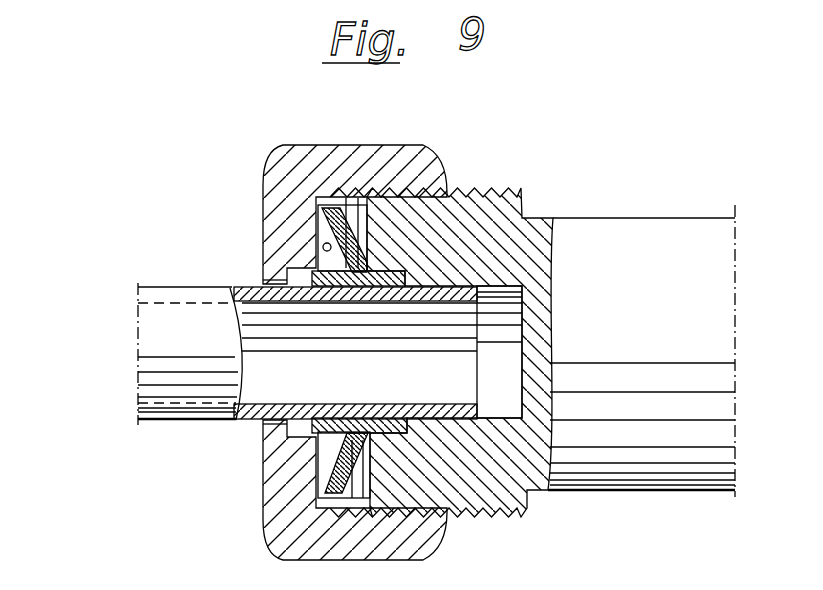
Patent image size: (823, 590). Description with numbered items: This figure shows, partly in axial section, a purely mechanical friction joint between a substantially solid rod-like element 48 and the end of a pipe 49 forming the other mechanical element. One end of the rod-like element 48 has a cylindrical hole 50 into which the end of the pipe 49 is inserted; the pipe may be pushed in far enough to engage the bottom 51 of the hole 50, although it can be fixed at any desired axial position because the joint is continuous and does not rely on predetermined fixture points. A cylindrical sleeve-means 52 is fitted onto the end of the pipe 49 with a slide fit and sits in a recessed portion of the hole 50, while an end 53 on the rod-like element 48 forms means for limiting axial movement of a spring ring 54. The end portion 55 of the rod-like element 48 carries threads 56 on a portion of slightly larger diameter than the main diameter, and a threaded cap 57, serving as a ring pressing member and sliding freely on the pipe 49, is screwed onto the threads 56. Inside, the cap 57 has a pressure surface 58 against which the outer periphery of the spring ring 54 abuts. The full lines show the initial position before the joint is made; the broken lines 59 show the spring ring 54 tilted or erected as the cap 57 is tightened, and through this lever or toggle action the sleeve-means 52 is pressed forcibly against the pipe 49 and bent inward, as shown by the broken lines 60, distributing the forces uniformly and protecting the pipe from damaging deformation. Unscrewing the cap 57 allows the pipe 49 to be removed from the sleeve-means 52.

The rod-like element 48 is at (648, 233).
The pipe 49 is at (160, 342).
The cylindrical hole 50 is at (515, 337).
The bottom 51 is at (525, 354).
The sleeve-means 52 is at (290, 426).
The end 53 is at (455, 507).
The spring ring 54 is at (330, 205).
The end portion 55 is at (525, 256).
The threads 56 is at (463, 181).
The threaded cap 57 is at (283, 168).
The pressure surface 58 is at (322, 240).
The broken lines 59 is at (358, 210).
The broken lines 60 is at (288, 284).